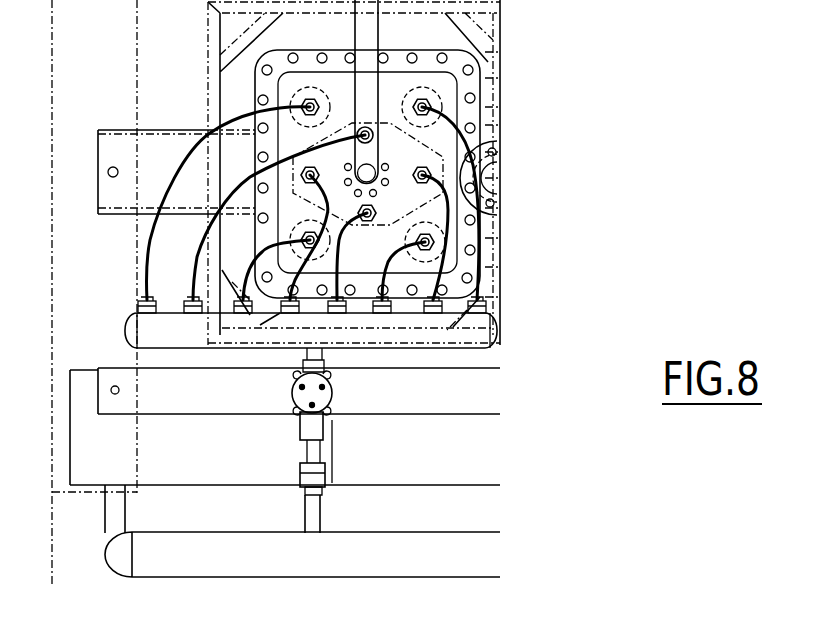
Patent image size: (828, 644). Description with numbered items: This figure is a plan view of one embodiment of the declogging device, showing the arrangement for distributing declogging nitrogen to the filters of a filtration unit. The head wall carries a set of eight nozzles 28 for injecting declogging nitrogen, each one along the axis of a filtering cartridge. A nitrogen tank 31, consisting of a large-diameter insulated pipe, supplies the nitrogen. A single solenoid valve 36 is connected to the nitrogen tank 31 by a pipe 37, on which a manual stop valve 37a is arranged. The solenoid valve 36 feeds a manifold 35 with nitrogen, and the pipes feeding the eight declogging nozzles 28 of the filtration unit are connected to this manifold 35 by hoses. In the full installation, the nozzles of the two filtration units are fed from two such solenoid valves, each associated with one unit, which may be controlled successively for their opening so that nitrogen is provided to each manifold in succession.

The nozzles 28 is at (316, 92).
The manifold 35 is at (497, 322).
The solenoid valve 36 is at (333, 392).
The manual stop valve 37a is at (300, 477).
The pipe 37 is at (322, 516).
The nitrogen tank 31 is at (240, 570).